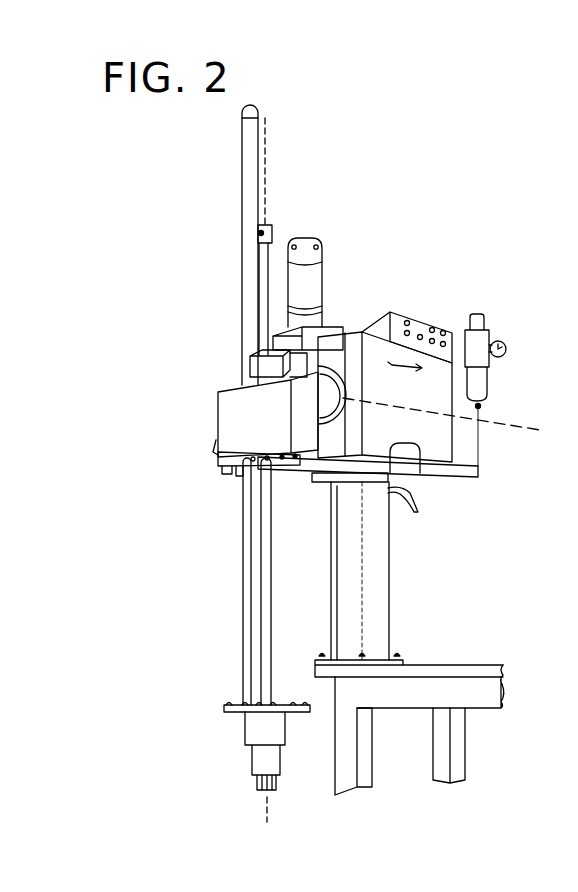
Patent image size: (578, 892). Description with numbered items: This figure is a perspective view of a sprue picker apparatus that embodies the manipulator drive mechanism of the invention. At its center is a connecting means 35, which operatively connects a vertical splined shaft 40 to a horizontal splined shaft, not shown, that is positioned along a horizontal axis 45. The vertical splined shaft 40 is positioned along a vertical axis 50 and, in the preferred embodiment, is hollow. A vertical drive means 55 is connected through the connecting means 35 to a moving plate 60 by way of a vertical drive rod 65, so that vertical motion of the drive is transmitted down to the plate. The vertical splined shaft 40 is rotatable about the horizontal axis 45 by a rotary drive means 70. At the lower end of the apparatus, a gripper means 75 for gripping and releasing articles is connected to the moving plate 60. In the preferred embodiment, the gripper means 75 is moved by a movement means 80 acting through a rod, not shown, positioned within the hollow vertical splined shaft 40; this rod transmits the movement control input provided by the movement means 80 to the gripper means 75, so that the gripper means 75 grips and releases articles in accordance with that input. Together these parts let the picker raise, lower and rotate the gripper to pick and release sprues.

The connecting means 35 is at (228, 398).
The vertical splined shaft 40 is at (272, 588).
The horizontal axis 45 is at (504, 425).
The vertical axis 50 is at (268, 153).
The vertical drive means 55 is at (245, 147).
The moving plate 60 is at (213, 707).
The vertical drive rod 65 is at (243, 580).
The rotary drive means 70 is at (312, 240).
The gripper means 75 is at (252, 762).
The movement means 80 is at (272, 232).